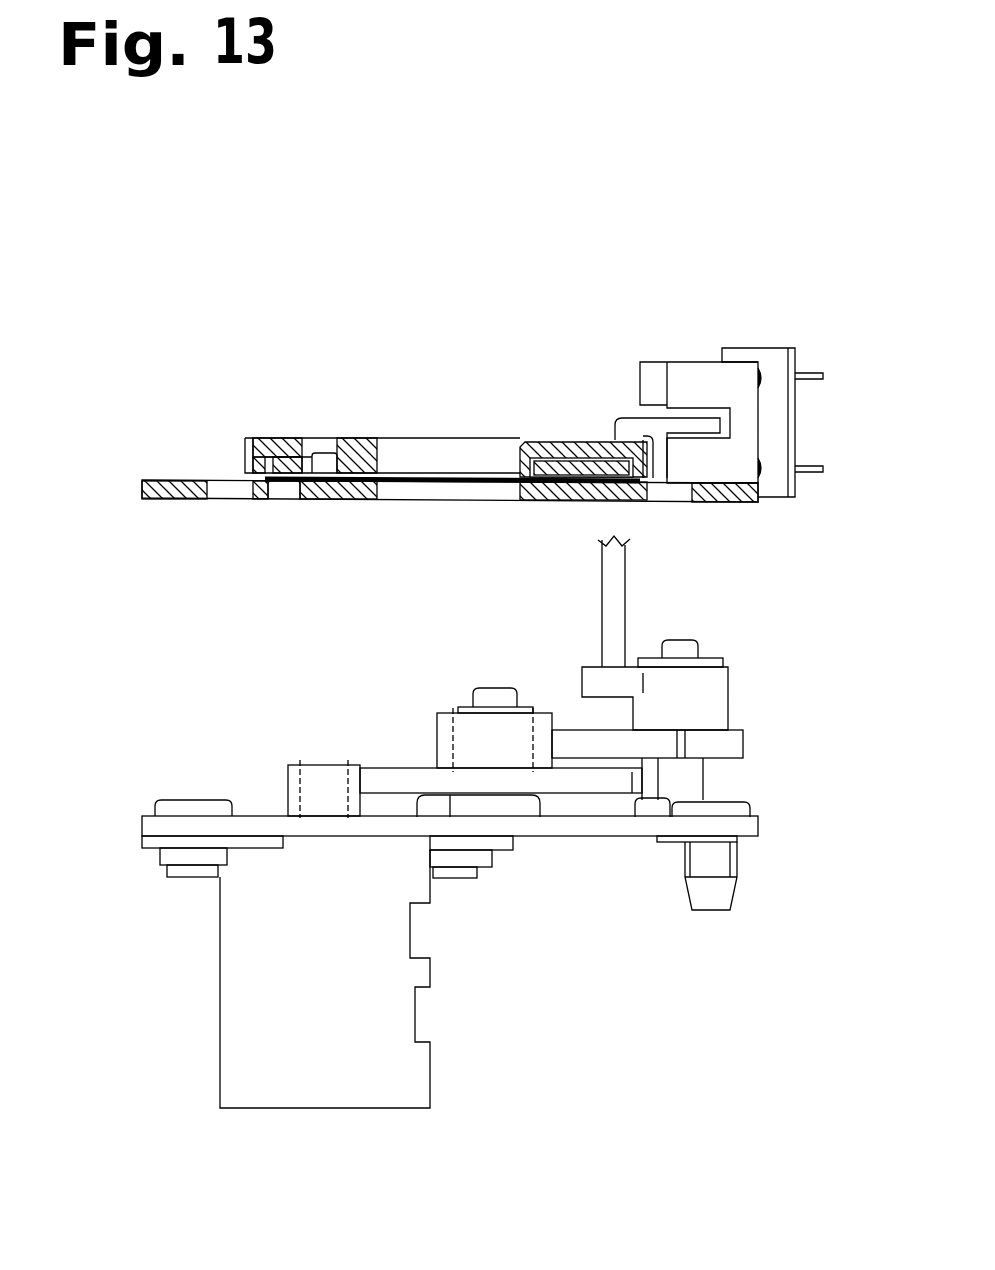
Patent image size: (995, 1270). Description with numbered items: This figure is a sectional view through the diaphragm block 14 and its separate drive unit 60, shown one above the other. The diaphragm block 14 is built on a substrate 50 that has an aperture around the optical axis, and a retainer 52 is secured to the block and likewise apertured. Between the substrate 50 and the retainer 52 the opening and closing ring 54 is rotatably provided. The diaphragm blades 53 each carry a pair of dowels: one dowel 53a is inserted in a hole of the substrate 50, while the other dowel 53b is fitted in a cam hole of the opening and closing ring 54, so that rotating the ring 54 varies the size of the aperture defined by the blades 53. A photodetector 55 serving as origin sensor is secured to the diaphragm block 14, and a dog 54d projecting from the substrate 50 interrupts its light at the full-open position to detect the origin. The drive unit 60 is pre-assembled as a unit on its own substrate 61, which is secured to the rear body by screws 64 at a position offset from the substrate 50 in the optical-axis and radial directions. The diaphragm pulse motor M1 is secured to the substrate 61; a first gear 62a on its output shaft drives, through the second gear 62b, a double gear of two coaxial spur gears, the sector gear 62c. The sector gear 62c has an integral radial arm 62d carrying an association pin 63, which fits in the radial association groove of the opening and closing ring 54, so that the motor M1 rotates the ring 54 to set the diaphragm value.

The diaphragm block 14 is at (812, 293).
The substrate 50 is at (167, 490).
The retainer 52 is at (573, 440).
The diaphragm blades 53 is at (435, 476).
The dowels 53a is at (320, 463).
The dowels 53b is at (283, 490).
The opening and closing ring 54 is at (550, 467).
The dog 54d is at (672, 427).
The photodetector (origin sensor) 55 is at (702, 362).
The drive unit 60 is at (127, 739).
The substrate 61 is at (167, 825).
The first gear 62a is at (317, 787).
The second gear 62b is at (493, 735).
The sector gear 62c is at (630, 747).
The radial arm 62d is at (622, 682).
The association pin 63 is at (618, 580).
The screws 64 is at (720, 812).
The diaphragm pulse motor M1 is at (385, 1012).